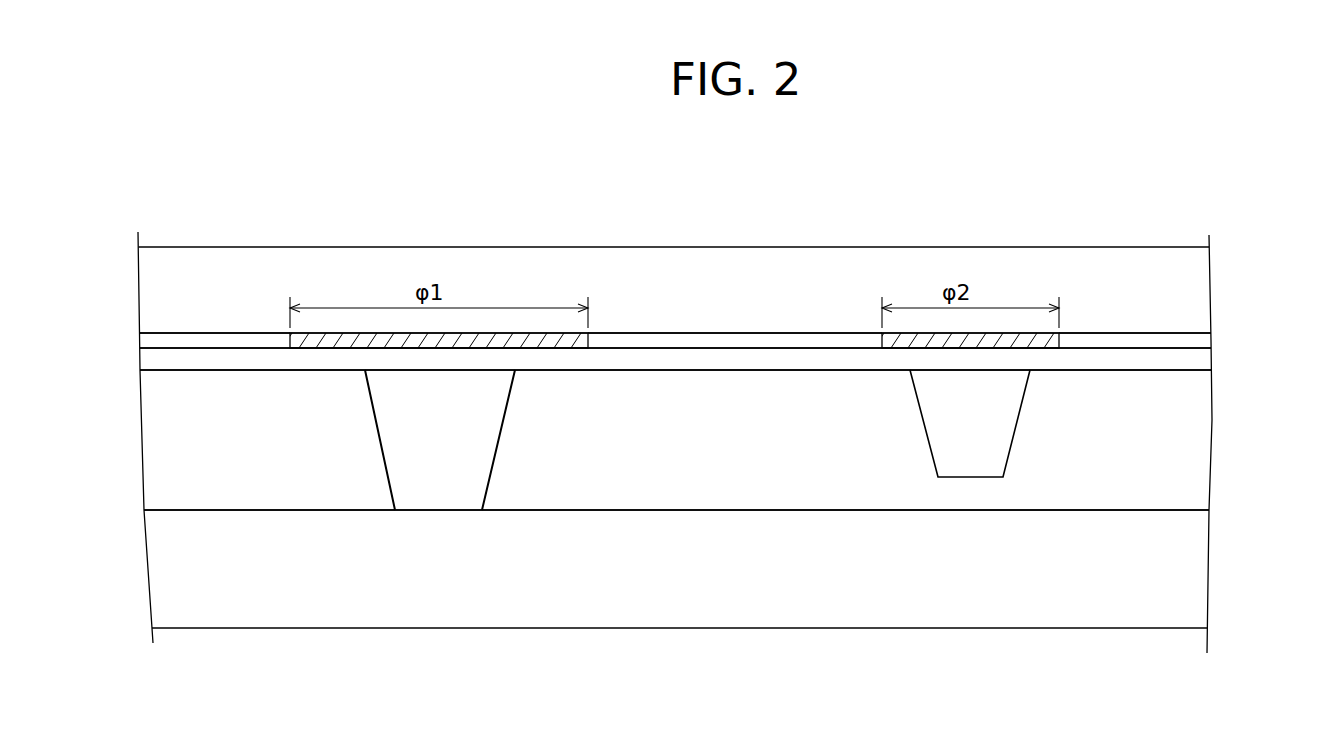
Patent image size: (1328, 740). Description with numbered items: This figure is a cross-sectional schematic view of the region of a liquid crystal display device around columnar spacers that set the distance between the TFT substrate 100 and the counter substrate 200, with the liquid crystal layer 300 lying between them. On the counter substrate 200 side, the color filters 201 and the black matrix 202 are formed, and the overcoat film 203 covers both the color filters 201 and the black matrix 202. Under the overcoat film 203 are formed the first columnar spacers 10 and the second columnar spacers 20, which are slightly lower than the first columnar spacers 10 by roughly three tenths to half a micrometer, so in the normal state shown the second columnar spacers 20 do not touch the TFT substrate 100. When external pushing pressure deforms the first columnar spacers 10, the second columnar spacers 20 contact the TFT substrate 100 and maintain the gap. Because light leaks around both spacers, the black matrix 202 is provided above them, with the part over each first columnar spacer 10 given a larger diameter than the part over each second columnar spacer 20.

The TFT substrate 100 is at (1175, 568).
The liquid crystal layer 300 is at (1183, 418).
The counter substrate 200 is at (1185, 287).
The color filters 201 is at (213, 338).
The black matrix 202 is at (494, 345).
The overcoat film 203 is at (638, 362).
The first columnar spacers 10 is at (405, 451).
The second columnar spacers 20 is at (952, 430).